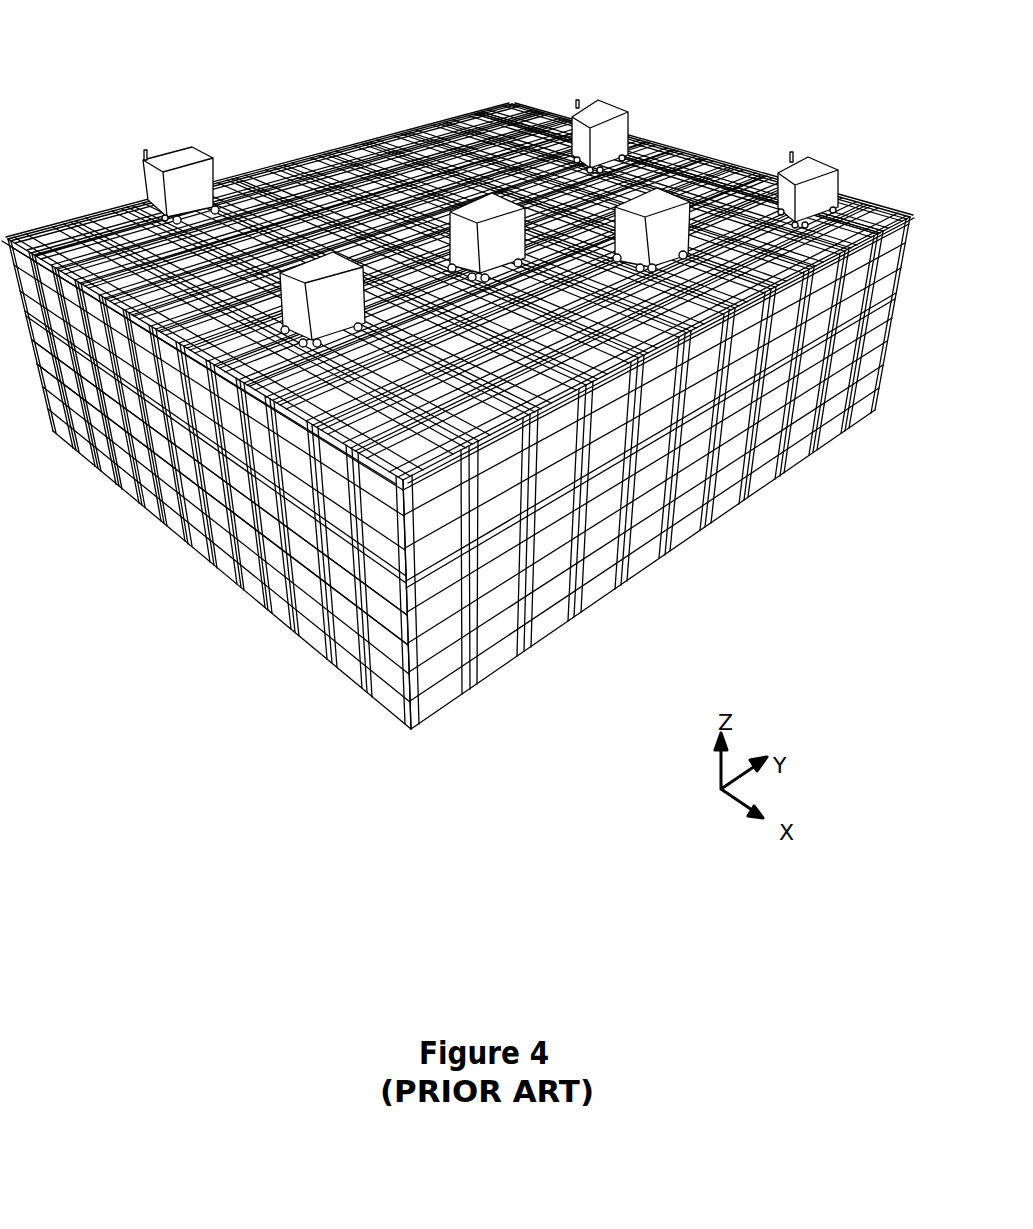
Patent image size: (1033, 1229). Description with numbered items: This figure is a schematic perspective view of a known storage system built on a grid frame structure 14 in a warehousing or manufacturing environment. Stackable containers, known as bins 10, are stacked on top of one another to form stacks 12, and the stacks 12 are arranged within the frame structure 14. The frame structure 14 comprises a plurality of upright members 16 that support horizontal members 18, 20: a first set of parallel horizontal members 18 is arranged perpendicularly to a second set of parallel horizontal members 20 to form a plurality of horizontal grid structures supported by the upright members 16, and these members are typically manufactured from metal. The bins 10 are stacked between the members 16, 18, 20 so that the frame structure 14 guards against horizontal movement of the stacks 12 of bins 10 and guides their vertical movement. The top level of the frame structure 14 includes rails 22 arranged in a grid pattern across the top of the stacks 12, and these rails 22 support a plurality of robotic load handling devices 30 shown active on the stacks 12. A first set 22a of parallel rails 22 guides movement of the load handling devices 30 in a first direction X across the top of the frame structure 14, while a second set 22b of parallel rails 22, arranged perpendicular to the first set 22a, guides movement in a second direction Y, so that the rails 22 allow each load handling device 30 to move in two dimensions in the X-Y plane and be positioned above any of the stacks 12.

The bins 10 is at (435, 610).
The stacks 12 is at (828, 433).
The grid frame structure 14 is at (878, 207).
The upright members 16 is at (326, 610).
The first set of parallel horizontal members 18 is at (557, 520).
The second set of parallel horizontal members 20 is at (240, 487).
The rails 22 is at (98, 228).
The first set of parallel rails 22a is at (240, 348).
The second set of parallel rails 22b is at (322, 215).
The robotic load handling devices 30 is at (625, 130).